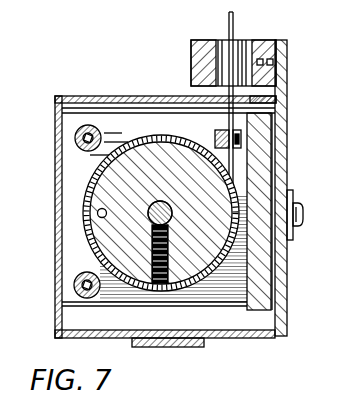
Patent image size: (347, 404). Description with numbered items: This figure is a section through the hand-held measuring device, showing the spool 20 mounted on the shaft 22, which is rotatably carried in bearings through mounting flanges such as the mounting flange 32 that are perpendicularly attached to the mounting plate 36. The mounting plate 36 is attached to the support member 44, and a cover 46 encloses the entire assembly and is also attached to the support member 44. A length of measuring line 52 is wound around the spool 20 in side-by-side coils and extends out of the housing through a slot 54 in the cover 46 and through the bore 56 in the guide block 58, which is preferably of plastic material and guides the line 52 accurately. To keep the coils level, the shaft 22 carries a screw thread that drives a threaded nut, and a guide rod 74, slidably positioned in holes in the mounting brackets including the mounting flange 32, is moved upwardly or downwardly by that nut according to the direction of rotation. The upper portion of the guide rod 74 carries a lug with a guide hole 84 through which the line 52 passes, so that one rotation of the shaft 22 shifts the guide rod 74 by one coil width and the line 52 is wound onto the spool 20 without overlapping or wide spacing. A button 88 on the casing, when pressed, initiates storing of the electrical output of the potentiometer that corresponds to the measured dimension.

The spool 20 is at (117, 175).
The shaft 22 is at (157, 218).
The mounting flange 32 is at (70, 187).
The mounting plate 36 is at (258, 270).
The support member 44 is at (288, 123).
The cover 46 is at (81, 97).
The measuring line 52 is at (240, 25).
The slot 54 is at (283, 100).
The bore 56 is at (224, 34).
The guide block 58 is at (195, 62).
The guide rod 74 is at (241, 144).
The guide hole 84 is at (215, 133).
The button 88 is at (301, 209).